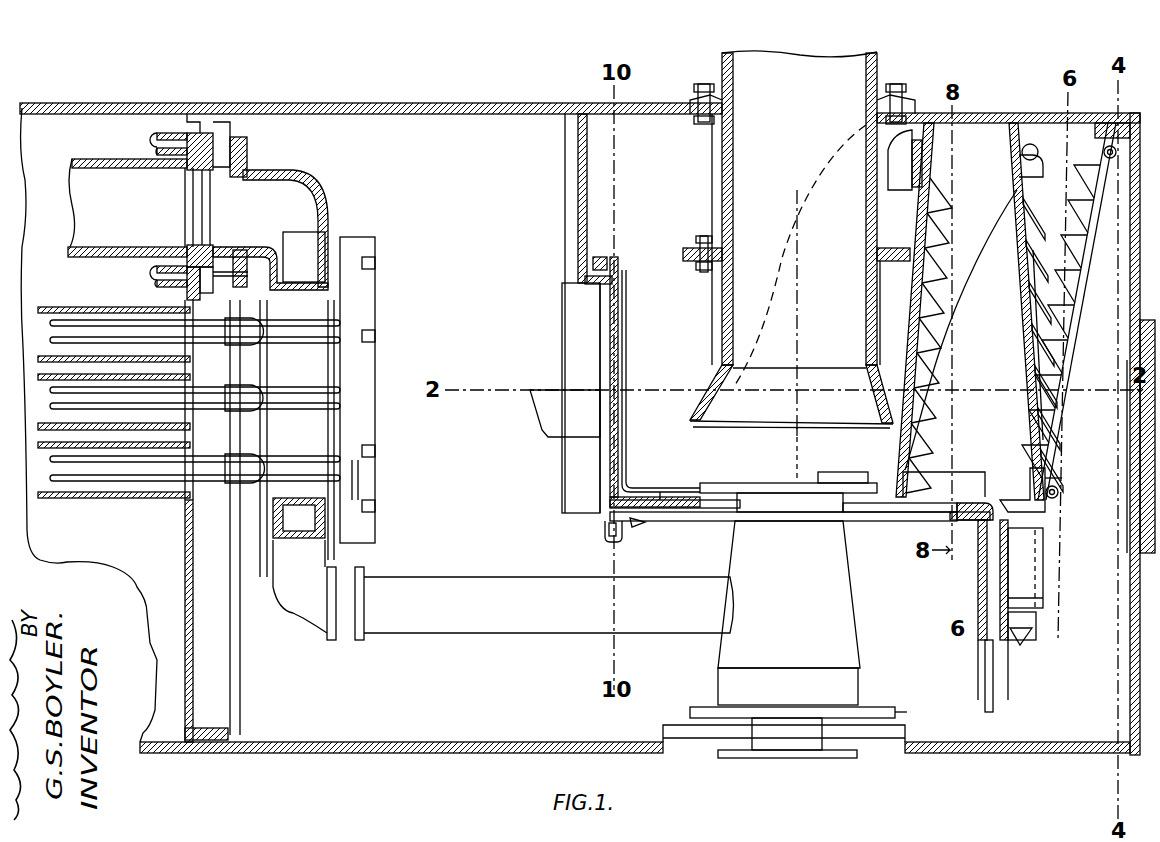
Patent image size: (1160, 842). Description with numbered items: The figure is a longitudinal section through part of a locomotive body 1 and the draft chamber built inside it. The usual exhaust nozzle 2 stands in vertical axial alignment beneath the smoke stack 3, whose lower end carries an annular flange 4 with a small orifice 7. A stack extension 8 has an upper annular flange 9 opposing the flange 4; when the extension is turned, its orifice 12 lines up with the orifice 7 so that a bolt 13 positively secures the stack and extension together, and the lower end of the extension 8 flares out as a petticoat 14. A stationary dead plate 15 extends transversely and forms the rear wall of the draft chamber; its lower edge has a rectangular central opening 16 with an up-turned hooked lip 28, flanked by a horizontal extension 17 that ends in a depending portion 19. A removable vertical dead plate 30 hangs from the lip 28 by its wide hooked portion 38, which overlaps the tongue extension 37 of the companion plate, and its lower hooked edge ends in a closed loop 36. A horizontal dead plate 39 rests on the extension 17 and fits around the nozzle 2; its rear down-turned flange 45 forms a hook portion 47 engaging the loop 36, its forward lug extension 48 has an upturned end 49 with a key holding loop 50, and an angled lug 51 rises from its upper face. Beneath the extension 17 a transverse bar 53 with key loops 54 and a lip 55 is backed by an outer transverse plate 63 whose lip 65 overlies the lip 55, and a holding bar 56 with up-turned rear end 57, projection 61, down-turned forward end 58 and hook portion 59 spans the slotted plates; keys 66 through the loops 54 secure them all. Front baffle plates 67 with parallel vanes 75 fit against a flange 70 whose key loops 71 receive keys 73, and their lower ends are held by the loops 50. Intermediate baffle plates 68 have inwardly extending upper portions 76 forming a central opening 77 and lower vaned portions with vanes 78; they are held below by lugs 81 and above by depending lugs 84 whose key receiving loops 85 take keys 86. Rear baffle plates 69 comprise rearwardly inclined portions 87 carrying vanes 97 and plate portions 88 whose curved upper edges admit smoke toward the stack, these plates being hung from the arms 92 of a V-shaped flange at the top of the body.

The body of the locomotive 1 is at (410, 753).
The exhaust nozzle 2 is at (835, 615).
The smoke stack 3 is at (745, 187).
The annular surrounding flange 4 is at (890, 249).
The small orifice 7 is at (688, 250).
The stack extension 8 is at (722, 330).
The annular flange 9 is at (890, 262).
The orifice 12 is at (710, 265).
The bolt 13 is at (702, 237).
The flaring portion or petticoat 14 is at (755, 372).
The stationary dead plate 15 is at (578, 182).
The rectangular central opening 16 is at (611, 347).
The horizontal extension 17 is at (690, 522).
The depending portion 19 is at (993, 692).
The up-turned hooked lip 28 is at (588, 281).
The removable vertical dead plate 30 is at (620, 300).
The closed loop 36 is at (622, 542).
The tongue extension 37 is at (599, 330).
The hooked portion 38 is at (600, 258).
The horizontal dead plate 39 is at (672, 501).
The down-turned flange 45 is at (607, 518).
The hook portion 47 is at (607, 540).
The lug extension 48 is at (1030, 506).
The upturned end 49 is at (1067, 468).
The key holding loop 50 is at (1058, 493).
The lug 51 is at (845, 478).
The transverse bar 53 is at (982, 560).
The key loop 54 is at (1040, 578).
The rearwardly extending lip 55 is at (950, 533).
The holding bar 56 is at (652, 490).
The up-turned rear end 57 is at (627, 360).
The down-turned forward end 58 is at (1022, 632).
The hook portion 59 is at (650, 527).
The projection 61 is at (555, 420).
The outer transverse plate 63 is at (1010, 600).
The rearwardly extending lip 65 is at (992, 505).
The key 66 is at (1024, 640).
The front baffle plate 67 is at (1052, 414).
The intermediate baffle plate 68 is at (985, 359).
The rear baffle plate 69 is at (905, 332).
The flange 70 is at (1100, 142).
The key loop 71 is at (1122, 124).
The key 73 is at (1104, 156).
The parallel vane 75 is at (1080, 311).
The inwardly extending upper portion 76 is at (1024, 232).
The central opening 77 is at (1032, 332).
The vane 78 is at (1040, 274).
The lug 81 is at (910, 485).
The lug 84 is at (1013, 125).
The key receiving loop 85 is at (1040, 167).
The key 86 is at (1030, 144).
The rearwardly inclined portion 87 is at (832, 443).
The plate portion 88 is at (770, 447).
The arm 92 is at (888, 170).
The vane 97 is at (926, 310).